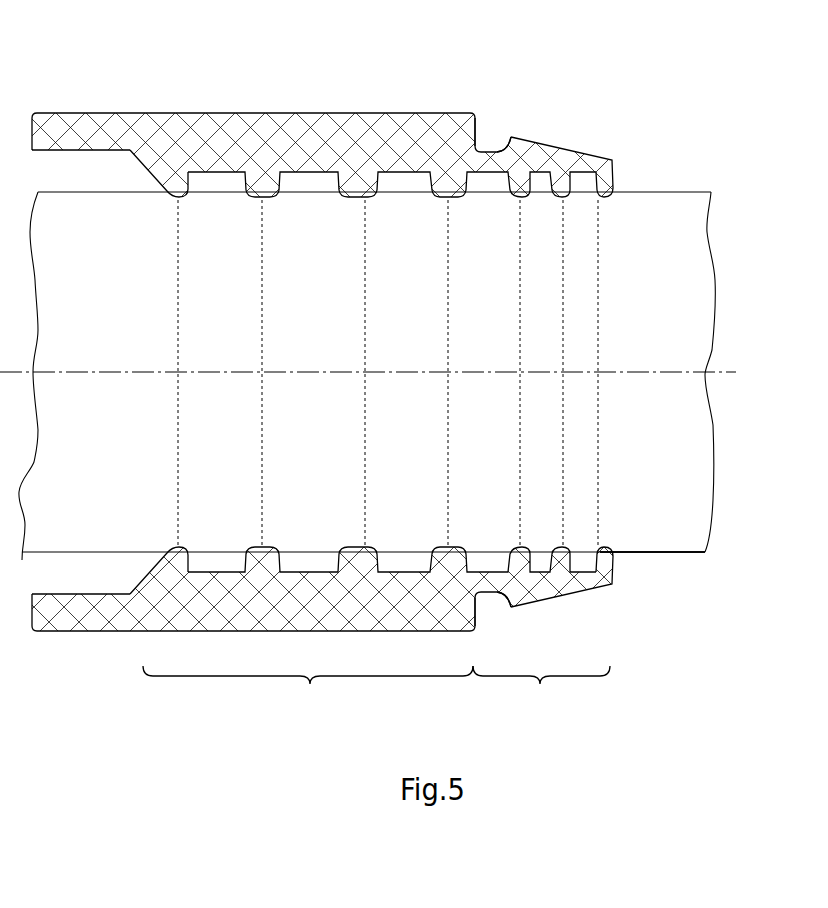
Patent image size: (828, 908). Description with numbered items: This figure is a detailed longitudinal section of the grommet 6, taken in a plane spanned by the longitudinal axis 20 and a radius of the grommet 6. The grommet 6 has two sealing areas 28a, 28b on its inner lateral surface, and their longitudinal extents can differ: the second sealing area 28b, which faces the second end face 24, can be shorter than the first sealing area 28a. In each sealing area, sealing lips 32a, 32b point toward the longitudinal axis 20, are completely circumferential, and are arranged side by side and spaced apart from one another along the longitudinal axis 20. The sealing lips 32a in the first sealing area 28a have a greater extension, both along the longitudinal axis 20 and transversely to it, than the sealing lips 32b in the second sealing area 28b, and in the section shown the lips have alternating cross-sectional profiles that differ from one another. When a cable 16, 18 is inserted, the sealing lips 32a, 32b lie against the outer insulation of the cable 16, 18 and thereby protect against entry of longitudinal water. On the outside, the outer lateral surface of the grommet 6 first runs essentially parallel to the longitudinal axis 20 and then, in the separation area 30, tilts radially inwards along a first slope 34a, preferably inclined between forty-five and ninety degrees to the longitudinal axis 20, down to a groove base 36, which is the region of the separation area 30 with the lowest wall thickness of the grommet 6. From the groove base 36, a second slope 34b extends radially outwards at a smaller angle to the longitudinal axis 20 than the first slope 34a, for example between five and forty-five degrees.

The grommet 6 is at (315, 72).
The cable 16 is at (659, 538).
The cable 18 is at (659, 538).
The longitudinal axis 20 is at (97, 372).
The second end face 24 is at (660, 176).
The first sealing area 28a is at (308, 691).
The second sealing area 28b is at (541, 691).
The separation area 30 is at (518, 88).
The sealing lips 32a is at (167, 168).
The sealing lips 32b is at (605, 158).
The first slope 34a is at (478, 125).
The second slope 34b is at (512, 130).
The groove base 36 is at (495, 130).